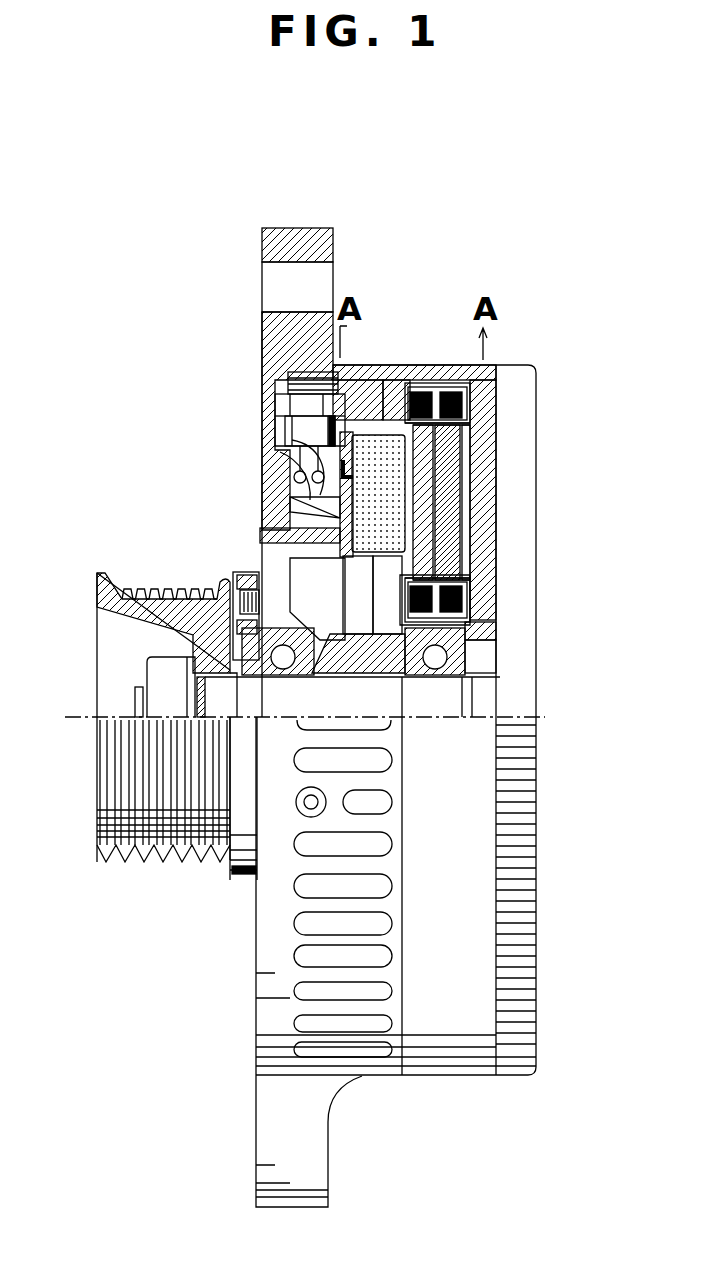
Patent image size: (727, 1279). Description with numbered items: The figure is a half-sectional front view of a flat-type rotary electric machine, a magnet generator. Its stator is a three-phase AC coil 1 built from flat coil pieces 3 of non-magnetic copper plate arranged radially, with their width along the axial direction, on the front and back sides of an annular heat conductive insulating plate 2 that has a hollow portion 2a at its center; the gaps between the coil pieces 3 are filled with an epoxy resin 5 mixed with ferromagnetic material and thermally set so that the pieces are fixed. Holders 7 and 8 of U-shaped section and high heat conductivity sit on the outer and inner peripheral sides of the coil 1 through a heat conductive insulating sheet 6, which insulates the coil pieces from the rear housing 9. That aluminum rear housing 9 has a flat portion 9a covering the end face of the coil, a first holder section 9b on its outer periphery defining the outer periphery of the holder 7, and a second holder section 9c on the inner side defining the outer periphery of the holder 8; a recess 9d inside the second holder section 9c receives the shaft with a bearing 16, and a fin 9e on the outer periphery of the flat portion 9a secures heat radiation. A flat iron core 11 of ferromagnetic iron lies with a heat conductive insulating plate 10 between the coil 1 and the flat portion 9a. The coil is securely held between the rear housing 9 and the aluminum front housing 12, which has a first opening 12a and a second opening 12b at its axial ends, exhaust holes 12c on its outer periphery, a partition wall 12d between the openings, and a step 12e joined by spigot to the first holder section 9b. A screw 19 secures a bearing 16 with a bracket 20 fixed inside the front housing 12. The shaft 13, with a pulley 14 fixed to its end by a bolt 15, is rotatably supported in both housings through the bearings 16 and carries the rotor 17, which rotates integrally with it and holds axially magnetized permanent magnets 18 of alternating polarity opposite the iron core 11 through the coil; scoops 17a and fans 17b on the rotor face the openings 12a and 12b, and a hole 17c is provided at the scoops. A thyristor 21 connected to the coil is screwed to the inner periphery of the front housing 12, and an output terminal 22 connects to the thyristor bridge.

The three-phase AC coil 1 is at (437, 383).
The heat conductive insulating plate 2 is at (498, 487).
The hollow portion 2a is at (498, 612).
The coil piece 3 is at (450, 378).
The epoxy resin 5 is at (498, 536).
The heat conductive insulating sheet 6 is at (420, 383).
The holder 7 is at (397, 366).
The holder 8 is at (498, 630).
The rear housing 9 is at (538, 374).
The flat portion 9a is at (498, 555).
The first holder section 9b is at (455, 366).
The second holder section 9c is at (498, 665).
The recess 9d is at (498, 685).
The fin 9e is at (530, 805).
The heat conductive insulating plate 10 is at (498, 503).
The flat iron core 11 is at (498, 578).
The front housing 12 is at (275, 345).
The first opening 12a is at (270, 520).
The second opening 12b is at (270, 560).
The exhaust holes 12c is at (303, 927).
The partition wall 12d is at (265, 528).
The step 12e is at (397, 380).
The shaft 13 is at (200, 700).
The pulley 14 is at (110, 778).
The bolt 15 is at (147, 672).
The bearing 16 is at (195, 628).
The rotor 17 is at (300, 492).
The scoops 17a is at (265, 572).
The fans 17b is at (268, 495).
The hole 17c is at (363, 637).
The permanent magnet 18 is at (278, 437).
The screw 19 is at (120, 622).
The bracket 20 is at (305, 697).
The thyristor 21 is at (270, 412).
The output terminal 22 is at (305, 805).